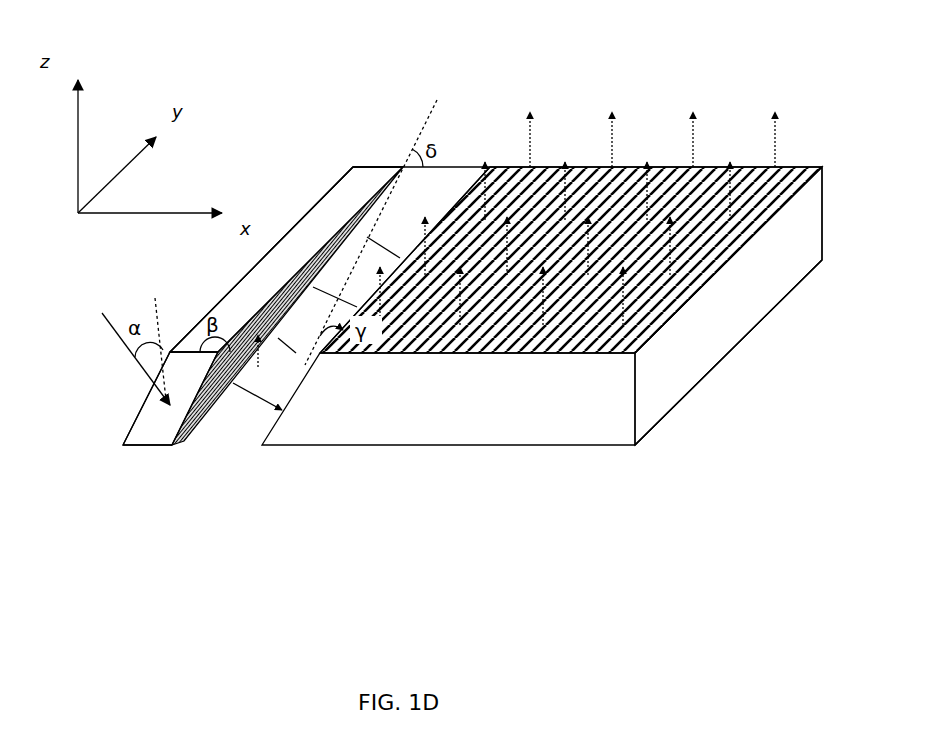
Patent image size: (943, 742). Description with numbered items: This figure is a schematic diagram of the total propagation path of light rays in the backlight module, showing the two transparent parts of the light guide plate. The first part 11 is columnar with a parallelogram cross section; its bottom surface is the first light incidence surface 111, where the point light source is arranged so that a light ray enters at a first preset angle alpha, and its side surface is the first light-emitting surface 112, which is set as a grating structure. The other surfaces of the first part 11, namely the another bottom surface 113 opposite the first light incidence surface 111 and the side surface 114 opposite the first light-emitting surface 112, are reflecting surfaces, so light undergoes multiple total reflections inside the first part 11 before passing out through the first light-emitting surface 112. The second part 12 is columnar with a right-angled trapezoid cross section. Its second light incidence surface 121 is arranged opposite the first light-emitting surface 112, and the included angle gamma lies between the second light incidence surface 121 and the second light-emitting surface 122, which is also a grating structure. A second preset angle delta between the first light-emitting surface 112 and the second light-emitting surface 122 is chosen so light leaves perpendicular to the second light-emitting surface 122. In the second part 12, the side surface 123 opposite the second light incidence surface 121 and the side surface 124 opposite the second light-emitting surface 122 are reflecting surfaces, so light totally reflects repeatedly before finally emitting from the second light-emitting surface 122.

The first part 11 is at (174, 447).
The first light incidence surface 111 is at (155, 427).
The first light-emitting surface 112 is at (333, 223).
The another bottom surface 113 is at (383, 167).
The side surface 114 is at (247, 282).
The second part 12 is at (480, 430).
The second light incidence surface 121 is at (453, 203).
The second light-emitting surface 122 is at (753, 200).
The side surface 123 is at (708, 330).
The side surface 124 is at (667, 411).